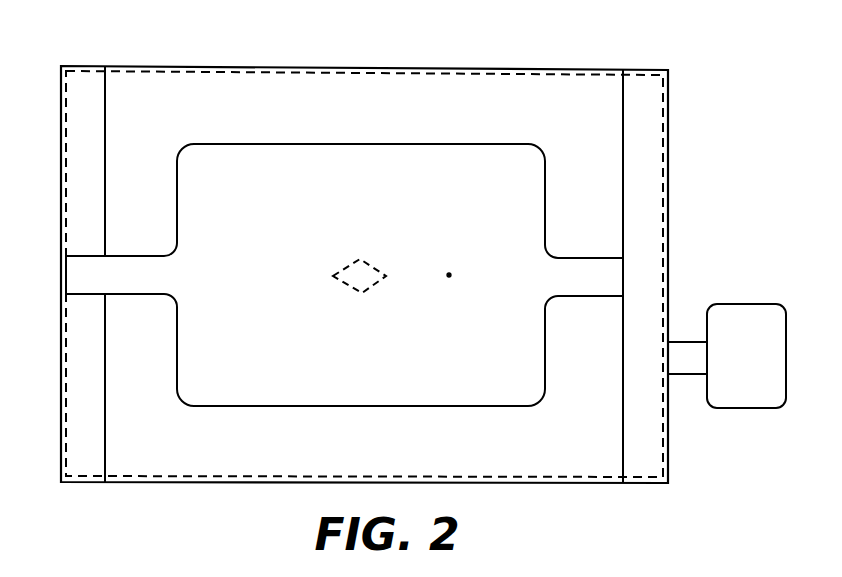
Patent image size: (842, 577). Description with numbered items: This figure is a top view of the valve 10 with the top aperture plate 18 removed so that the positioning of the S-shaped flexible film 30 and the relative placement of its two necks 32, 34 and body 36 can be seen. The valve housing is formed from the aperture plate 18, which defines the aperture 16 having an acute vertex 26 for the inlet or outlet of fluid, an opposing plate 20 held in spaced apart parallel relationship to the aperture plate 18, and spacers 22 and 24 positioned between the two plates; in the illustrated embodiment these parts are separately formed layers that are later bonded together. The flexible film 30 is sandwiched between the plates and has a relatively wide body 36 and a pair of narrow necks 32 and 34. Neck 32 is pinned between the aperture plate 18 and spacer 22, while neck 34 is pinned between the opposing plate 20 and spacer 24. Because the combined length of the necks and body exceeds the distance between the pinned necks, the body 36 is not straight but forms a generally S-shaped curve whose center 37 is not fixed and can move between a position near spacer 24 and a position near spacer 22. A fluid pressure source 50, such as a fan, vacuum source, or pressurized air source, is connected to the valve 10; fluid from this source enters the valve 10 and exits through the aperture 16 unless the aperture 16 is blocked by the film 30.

The valve 10 is at (152, 60).
The aperture 16 is at (351, 265).
The aperture plate 18 is at (663, 155).
The opposing plate 20 is at (563, 102).
The spacer 22 is at (83, 440).
The spacer 24 is at (643, 432).
The acute vertex 26 is at (385, 276).
The flexible film 30 is at (273, 145).
The neck 32 is at (140, 282).
The neck 34 is at (583, 292).
The body 36 is at (298, 380).
The center 37 is at (449, 275).
The fluid pressure source 50 is at (727, 370).